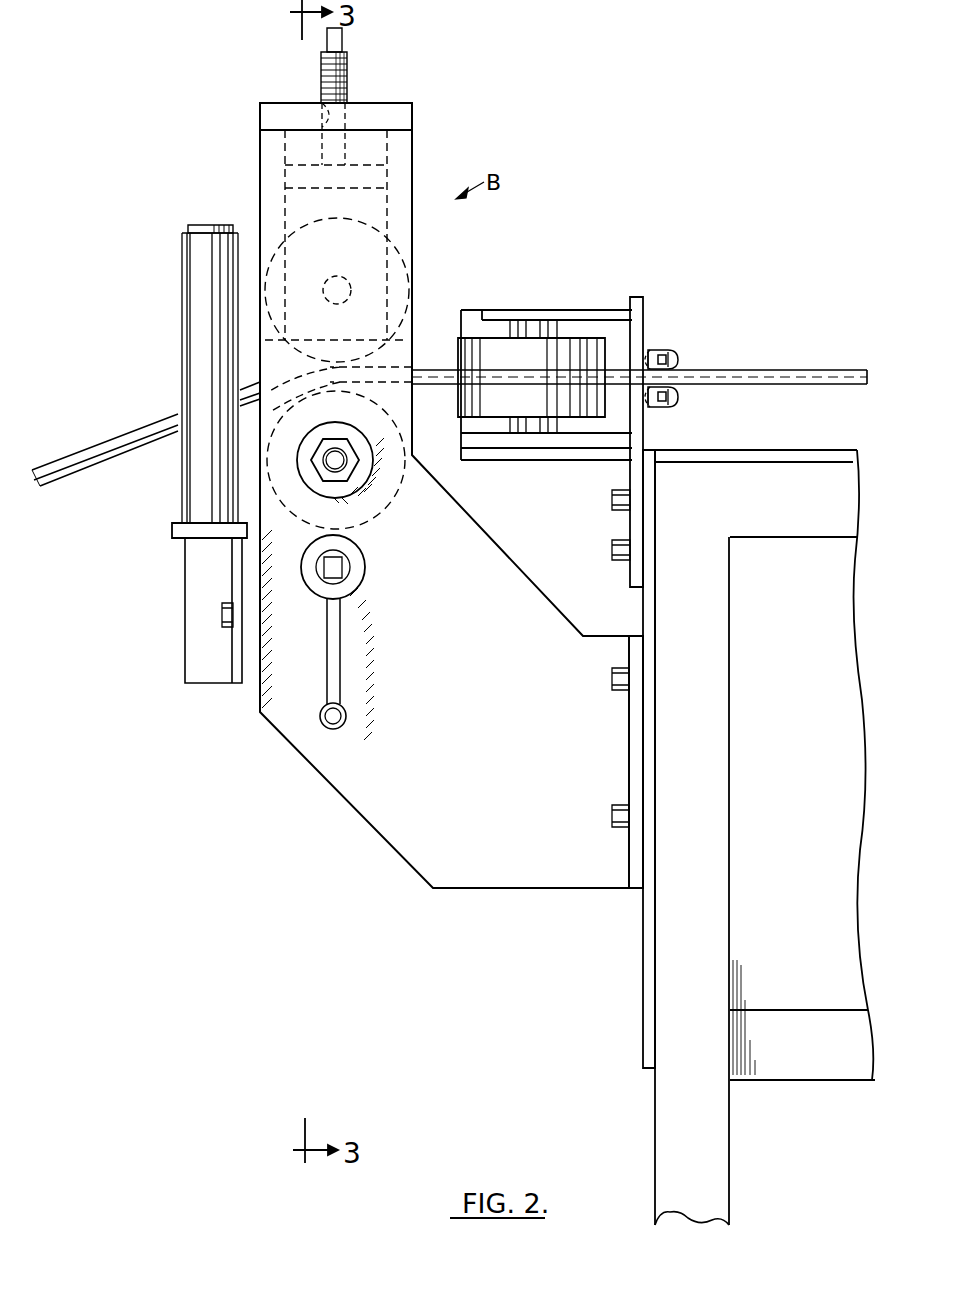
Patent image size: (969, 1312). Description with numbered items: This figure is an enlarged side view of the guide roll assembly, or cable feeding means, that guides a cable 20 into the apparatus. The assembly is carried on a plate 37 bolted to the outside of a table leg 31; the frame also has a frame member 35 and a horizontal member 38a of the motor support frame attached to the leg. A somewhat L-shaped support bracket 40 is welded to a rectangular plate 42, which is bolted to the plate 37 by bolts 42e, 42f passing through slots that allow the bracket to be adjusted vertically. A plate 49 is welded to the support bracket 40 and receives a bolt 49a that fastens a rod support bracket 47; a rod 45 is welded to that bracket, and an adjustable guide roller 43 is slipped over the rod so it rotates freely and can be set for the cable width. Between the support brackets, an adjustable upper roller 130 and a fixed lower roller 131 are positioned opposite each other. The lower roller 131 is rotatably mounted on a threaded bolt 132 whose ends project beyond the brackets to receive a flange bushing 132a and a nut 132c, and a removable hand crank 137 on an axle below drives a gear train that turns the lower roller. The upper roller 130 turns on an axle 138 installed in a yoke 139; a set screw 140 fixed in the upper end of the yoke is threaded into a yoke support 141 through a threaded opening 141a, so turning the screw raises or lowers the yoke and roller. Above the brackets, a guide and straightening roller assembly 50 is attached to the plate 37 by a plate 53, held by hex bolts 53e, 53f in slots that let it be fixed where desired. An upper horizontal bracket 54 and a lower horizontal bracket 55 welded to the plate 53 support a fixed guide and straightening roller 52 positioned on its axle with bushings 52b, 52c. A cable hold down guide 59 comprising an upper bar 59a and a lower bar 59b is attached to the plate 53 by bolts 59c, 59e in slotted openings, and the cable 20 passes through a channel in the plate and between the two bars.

The cable 20 is at (95, 458).
The leg 31 is at (680, 1130).
The frame member 35 is at (805, 515).
The plate 37 is at (650, 1030).
The horizontal member 38a is at (838, 1057).
The support bracket 40 is at (400, 826).
The rectangular plate 42 is at (636, 895).
The bolt 42e is at (612, 678).
The bolt 42f is at (612, 815).
The guide roller 43 is at (200, 345).
The rod 45 is at (205, 225).
The support bracket 47 is at (180, 528).
The plate 49 is at (255, 678).
The bolt 49a is at (222, 615).
The guide and straightening roller assembly 50 is at (652, 312).
The fixed guide and straightening roller 52 is at (485, 398).
The bushing 52b is at (548, 330).
The bushing 52c is at (525, 425).
The plate 53 is at (638, 297).
The hex bolt 53e is at (612, 500).
The hex bolt 53f is at (612, 548).
The upper horizontal bracket 54 is at (525, 318).
The lower horizontal bracket 55 is at (575, 440).
The cable hold down guide 59 is at (702, 350).
The upper bar 59a is at (650, 350).
The lower bar 59b is at (652, 405).
The bolt 59c is at (678, 356).
The bolt 59e is at (678, 396).
The adjustable upper roller 130 is at (408, 250).
The fixed lower roller 131 is at (380, 538).
The threaded bolt 132 is at (335, 452).
The flange bushing 132a is at (362, 490).
The nut 132c is at (358, 450).
The hand crank 137 is at (333, 645).
The axle 138 is at (337, 304).
The yoke 139 is at (412, 178).
The set screw 140 is at (347, 72).
The yoke support 141 is at (390, 115).
The threaded opening 141a is at (320, 103).